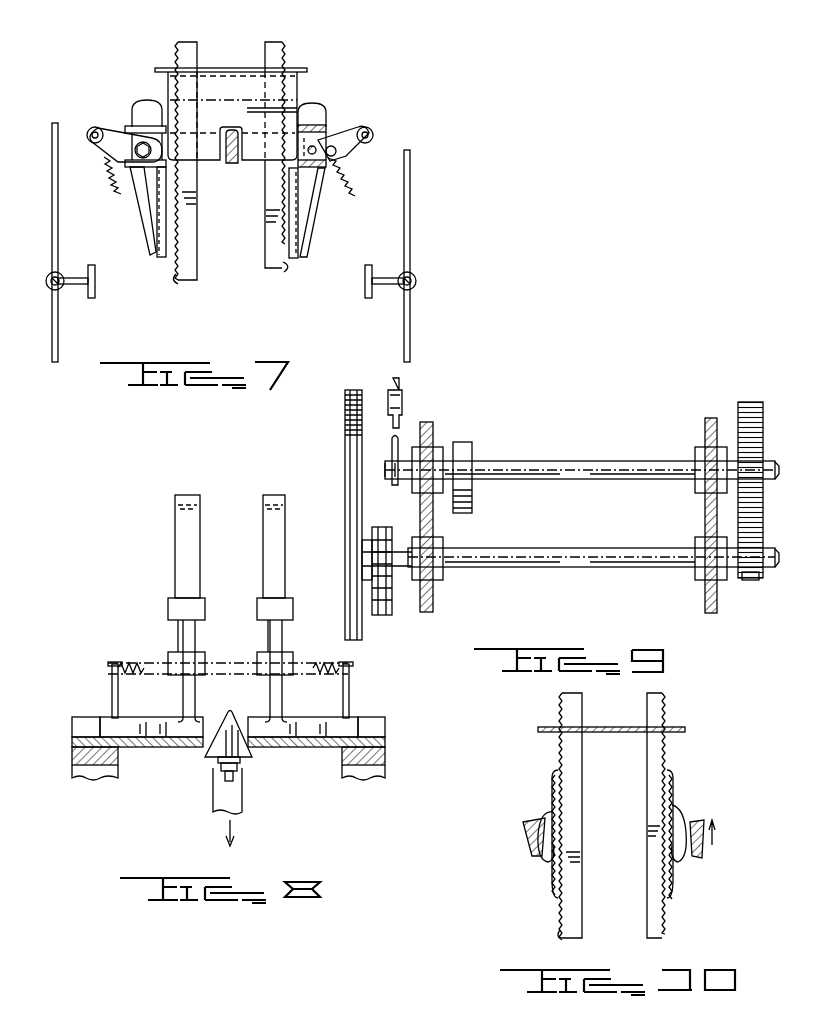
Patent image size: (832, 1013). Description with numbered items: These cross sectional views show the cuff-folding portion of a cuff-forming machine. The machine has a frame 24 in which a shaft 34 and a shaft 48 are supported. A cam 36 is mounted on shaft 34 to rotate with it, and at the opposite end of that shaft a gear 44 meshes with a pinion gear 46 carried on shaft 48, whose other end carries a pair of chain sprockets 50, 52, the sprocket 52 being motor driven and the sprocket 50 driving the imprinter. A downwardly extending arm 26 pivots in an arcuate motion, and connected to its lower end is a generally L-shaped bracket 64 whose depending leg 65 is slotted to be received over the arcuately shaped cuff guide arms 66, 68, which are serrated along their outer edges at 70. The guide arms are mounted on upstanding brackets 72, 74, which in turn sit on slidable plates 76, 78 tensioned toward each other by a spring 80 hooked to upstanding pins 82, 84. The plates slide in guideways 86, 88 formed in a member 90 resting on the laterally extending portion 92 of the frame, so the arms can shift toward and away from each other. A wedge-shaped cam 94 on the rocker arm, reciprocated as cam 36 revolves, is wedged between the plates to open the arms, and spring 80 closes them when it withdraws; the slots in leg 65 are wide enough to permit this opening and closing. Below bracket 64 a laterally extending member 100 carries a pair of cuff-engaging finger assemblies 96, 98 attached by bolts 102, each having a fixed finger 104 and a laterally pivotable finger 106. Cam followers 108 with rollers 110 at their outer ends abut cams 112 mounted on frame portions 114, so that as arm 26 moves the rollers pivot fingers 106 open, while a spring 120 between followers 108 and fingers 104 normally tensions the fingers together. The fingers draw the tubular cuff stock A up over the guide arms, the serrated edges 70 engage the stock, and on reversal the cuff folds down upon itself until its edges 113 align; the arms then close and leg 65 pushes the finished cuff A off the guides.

In FIG. 9, the frame 24 is at (428, 597).
In FIG. 7, the arm 26 is at (232, 166).
In FIG. 9, the shaft 34 is at (622, 466).
In FIG. 9, the cam 36 is at (466, 451).
In FIG. 9, the gear 44 is at (746, 410).
In FIG. 9, the pinion gear 46 is at (750, 581).
In FIG. 9, the shaft 48 is at (624, 557).
In FIG. 9, the chain sprocket 50 is at (392, 521).
In FIG. 9, the chain sprocket 52 is at (345, 435).
In FIG. 7, the L-shaped bracket 64 is at (300, 88).
In FIG. 7, the depending leg 65 is at (238, 66).
In FIG. 10, the depending leg 65 is at (614, 728).
In FIG. 7, the cuff guide arm 66 is at (276, 48).
In FIG. 8, the cuff guide arm 66 is at (180, 540).
In FIG. 10, the cuff guide arm 66 is at (652, 782).
In FIG. 7, the cuff guide arm 68 is at (192, 45).
In FIG. 8, the cuff guide arm 68 is at (270, 529).
In FIG. 10, the cuff guide arm 68 is at (572, 782).
In FIG. 7, the serrated edge 70 is at (178, 281).
In FIG. 10, the serrated edge 70 is at (560, 932).
In FIG. 8, the upstanding bracket 72 is at (186, 639).
In FIG. 8, the upstanding bracket 74 is at (282, 639).
In FIG. 8, the slidable plate 76 is at (142, 730).
In FIG. 8, the slidable plate 78 is at (302, 730).
In FIG. 8, the spring 80 is at (124, 665).
In FIG. 8, the upstanding pin 82 is at (112, 685).
In FIG. 8, the upstanding pin 84 is at (350, 685).
In FIG. 8, the guideway 86 is at (88, 727).
In FIG. 8, the guideway 88 is at (372, 726).
In FIG. 8, the member 90 is at (72, 742).
In FIG. 8, the laterally extending portion 92 is at (72, 760).
In FIG. 8, the wedge-shaped cam 94 is at (212, 748).
In FIG. 7, the cuff-engaging finger assembly 96 is at (140, 100).
In FIG. 7, the cuff-engaging finger assembly 98 is at (322, 124).
In FIG. 7, the laterally extending member 100 is at (210, 162).
In FIG. 7, the bolt 102 is at (142, 148).
In FIG. 7, the fixed finger 104 is at (150, 208).
In FIG. 7, the pivotable finger 106 is at (152, 234).
In FIG. 7, the cam follower 108 is at (93, 144).
In FIG. 7, the roller 110 is at (366, 140).
In FIG. 7, the cam 112 is at (94, 297).
In FIG. 10, the edge of the stock 113 is at (538, 822).
In FIG. 7, the frame portion 114 is at (52, 317).
In FIG. 7, the spring 120 is at (124, 178).
In FIG. 10, the cuff stock A is at (680, 802).